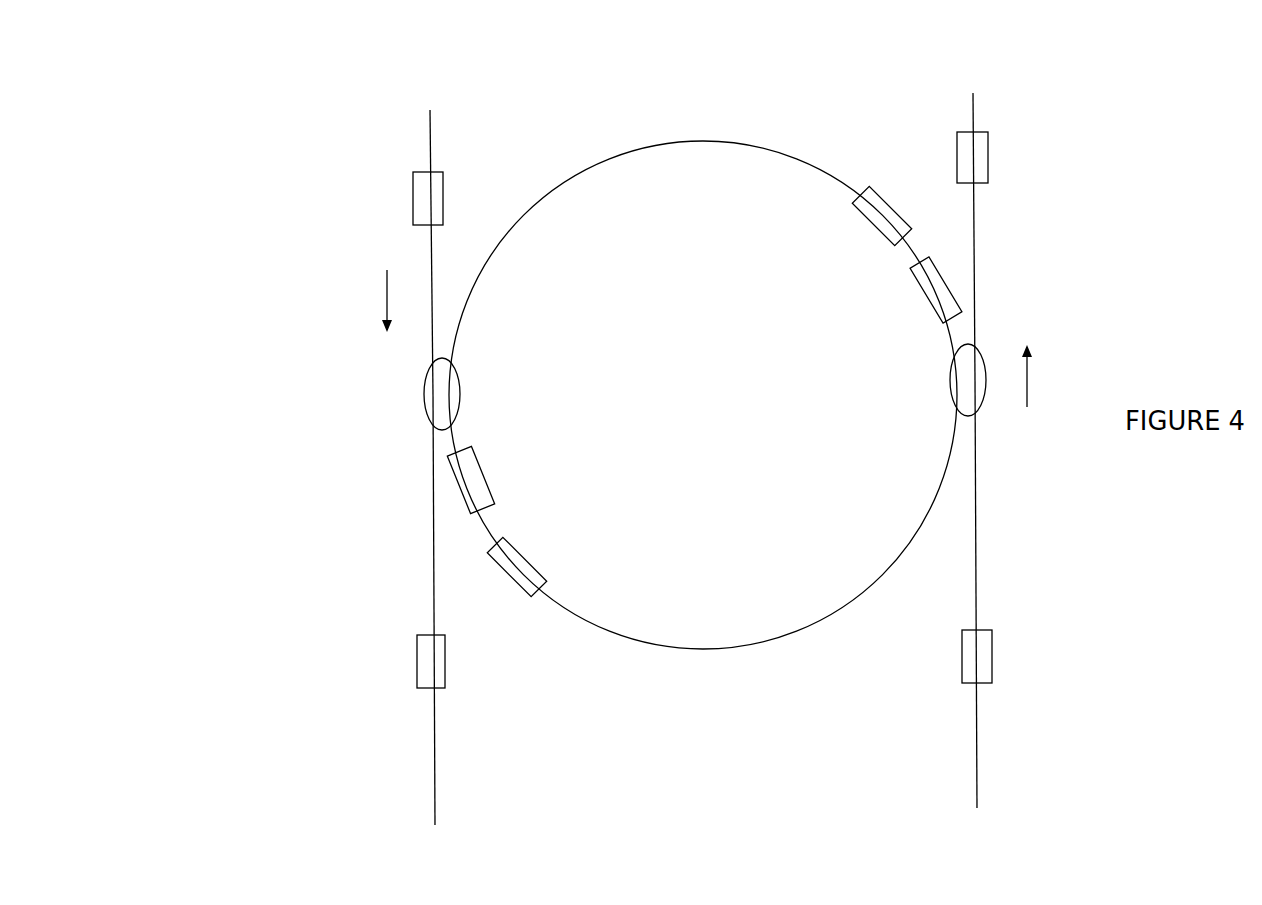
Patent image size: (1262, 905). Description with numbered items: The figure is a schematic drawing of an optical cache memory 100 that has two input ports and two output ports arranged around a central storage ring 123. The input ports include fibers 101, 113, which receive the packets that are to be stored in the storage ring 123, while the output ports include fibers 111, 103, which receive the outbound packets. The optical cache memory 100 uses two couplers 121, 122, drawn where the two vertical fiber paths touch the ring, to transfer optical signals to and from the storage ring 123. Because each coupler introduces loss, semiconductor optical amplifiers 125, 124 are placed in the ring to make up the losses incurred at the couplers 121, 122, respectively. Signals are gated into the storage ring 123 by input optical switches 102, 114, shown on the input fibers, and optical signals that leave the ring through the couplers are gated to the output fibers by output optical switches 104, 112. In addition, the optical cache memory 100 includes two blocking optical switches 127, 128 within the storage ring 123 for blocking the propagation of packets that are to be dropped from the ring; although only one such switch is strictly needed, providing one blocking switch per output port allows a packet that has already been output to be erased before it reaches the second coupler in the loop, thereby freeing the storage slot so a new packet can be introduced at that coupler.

The optical cache memory 100 is at (255, 143).
The fiber 101 is at (431, 132).
The input optical switch 102 is at (465, 198).
The fiber 103 is at (435, 762).
The output optical switch 104 is at (470, 661).
The fiber 111 is at (973, 93).
The output optical switch 112 is at (1010, 157).
The fiber 113 is at (977, 778).
The input optical switch 114 is at (1016, 655).
The coupler 121 is at (461, 397).
The coupler 122 is at (950, 392).
The storage ring 123 is at (656, 150).
The semiconductor optical amplifier 124 is at (862, 214).
The semiconductor optical amplifier 125 is at (517, 567).
The optical switch 127 is at (470, 472).
The optical switch 128 is at (923, 278).